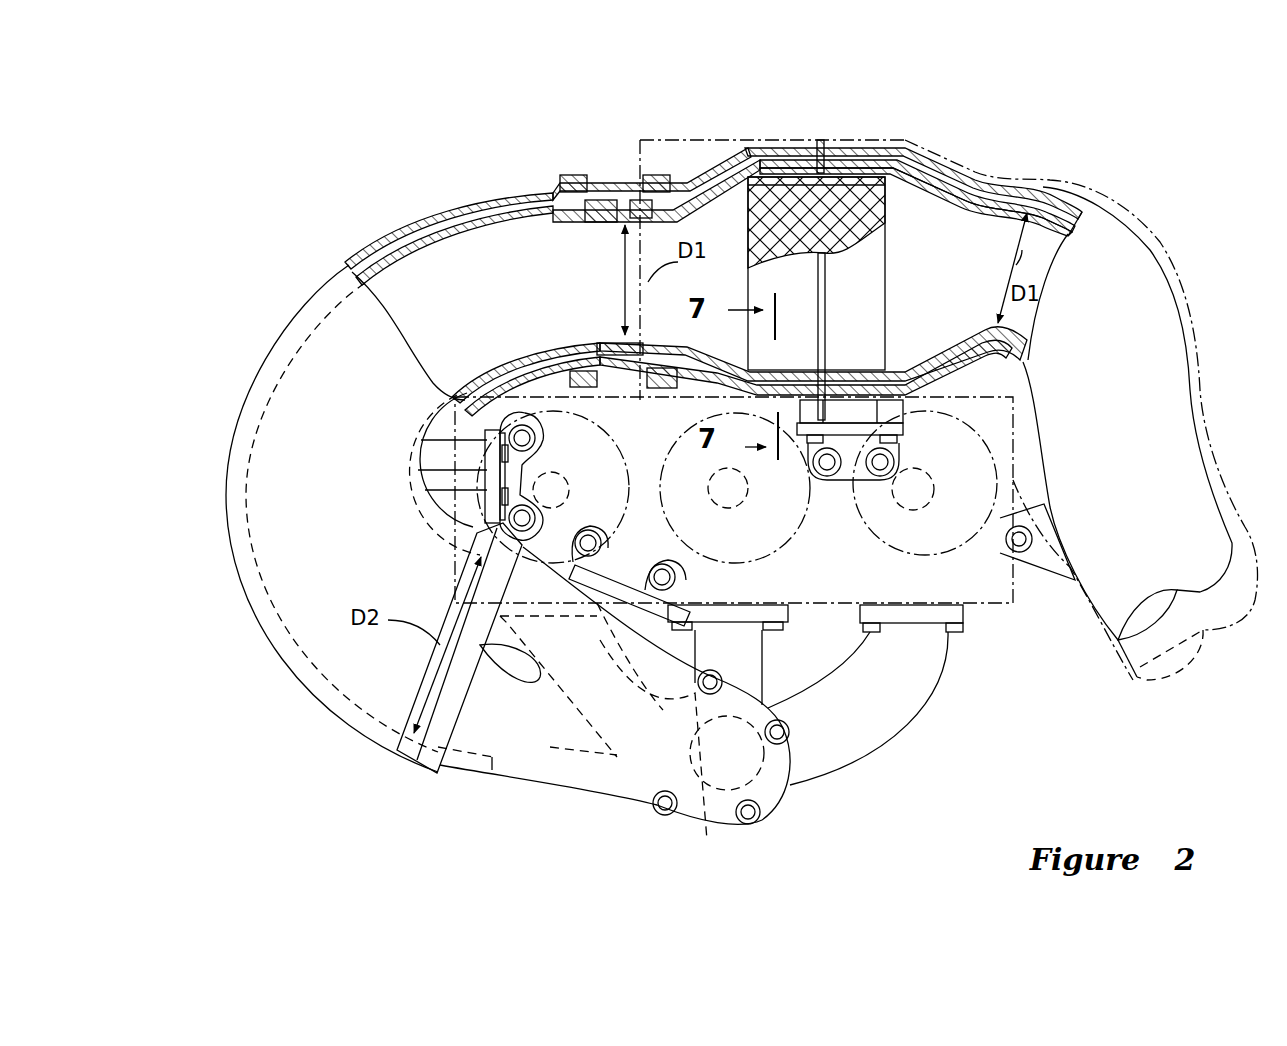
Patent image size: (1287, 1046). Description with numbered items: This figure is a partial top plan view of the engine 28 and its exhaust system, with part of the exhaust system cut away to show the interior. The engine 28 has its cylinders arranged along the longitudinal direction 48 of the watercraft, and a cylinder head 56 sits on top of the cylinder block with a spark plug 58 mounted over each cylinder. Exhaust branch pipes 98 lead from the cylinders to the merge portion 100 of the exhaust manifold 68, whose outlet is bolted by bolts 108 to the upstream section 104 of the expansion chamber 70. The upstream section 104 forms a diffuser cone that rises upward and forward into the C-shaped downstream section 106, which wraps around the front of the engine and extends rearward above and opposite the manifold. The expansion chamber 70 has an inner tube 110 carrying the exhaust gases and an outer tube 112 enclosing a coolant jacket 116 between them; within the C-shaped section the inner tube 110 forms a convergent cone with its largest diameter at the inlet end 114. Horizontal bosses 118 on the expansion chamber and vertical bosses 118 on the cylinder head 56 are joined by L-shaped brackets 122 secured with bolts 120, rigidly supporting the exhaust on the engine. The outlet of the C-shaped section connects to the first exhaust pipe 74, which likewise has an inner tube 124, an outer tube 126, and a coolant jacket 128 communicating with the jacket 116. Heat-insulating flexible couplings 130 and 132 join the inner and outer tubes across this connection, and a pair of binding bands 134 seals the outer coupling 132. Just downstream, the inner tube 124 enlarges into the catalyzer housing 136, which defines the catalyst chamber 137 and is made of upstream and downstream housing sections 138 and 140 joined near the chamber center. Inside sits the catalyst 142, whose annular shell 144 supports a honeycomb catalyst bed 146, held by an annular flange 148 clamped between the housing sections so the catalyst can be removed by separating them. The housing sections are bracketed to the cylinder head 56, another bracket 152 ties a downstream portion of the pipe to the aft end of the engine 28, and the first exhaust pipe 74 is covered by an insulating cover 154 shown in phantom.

The engine 28 is at (1015, 628).
The longitudinal direction 48 is at (770, 907).
The cylinder head 56 is at (980, 605).
The spark plug 58 is at (737, 502).
The exhaust manifold 68 is at (860, 752).
The expansion chamber 70 is at (467, 785).
The first exhaust pipe 74 is at (1185, 346).
The exhaust branch pipe 98 is at (497, 747).
The merge portion 100 is at (724, 795).
The upstream section 104 is at (530, 780).
The C-shaped downstream section 106 is at (336, 285).
The bolt 108 is at (703, 695).
The inner tube 110 is at (437, 240).
The outer tube 112 is at (465, 205).
The inlet end 114 is at (405, 762).
The coolant jacket 116 is at (508, 197).
The boss 118 is at (428, 492).
The bolt 120 is at (500, 515).
The L-shaped bracket 122 is at (701, 510).
The inner tube 124 is at (1062, 228).
The outer tube 126 is at (1080, 192).
The coolant jacket 128 is at (1030, 183).
The flexible coupling 130 is at (612, 200).
The flexible coupling 132 is at (627, 178).
The binding band 134 is at (572, 172).
The catalyzer housing 136 is at (823, 138).
The catalyst chamber 137 is at (853, 150).
The upstream housing section 138 is at (783, 142).
The downstream housing section 140 is at (887, 148).
The catalyst 142 is at (875, 270).
The annular shell 144 is at (872, 193).
The catalyst bed 146 is at (875, 215).
The annular flange 148 is at (828, 268).
The bracket 152 is at (1042, 570).
The insulating cover 154 is at (743, 133).